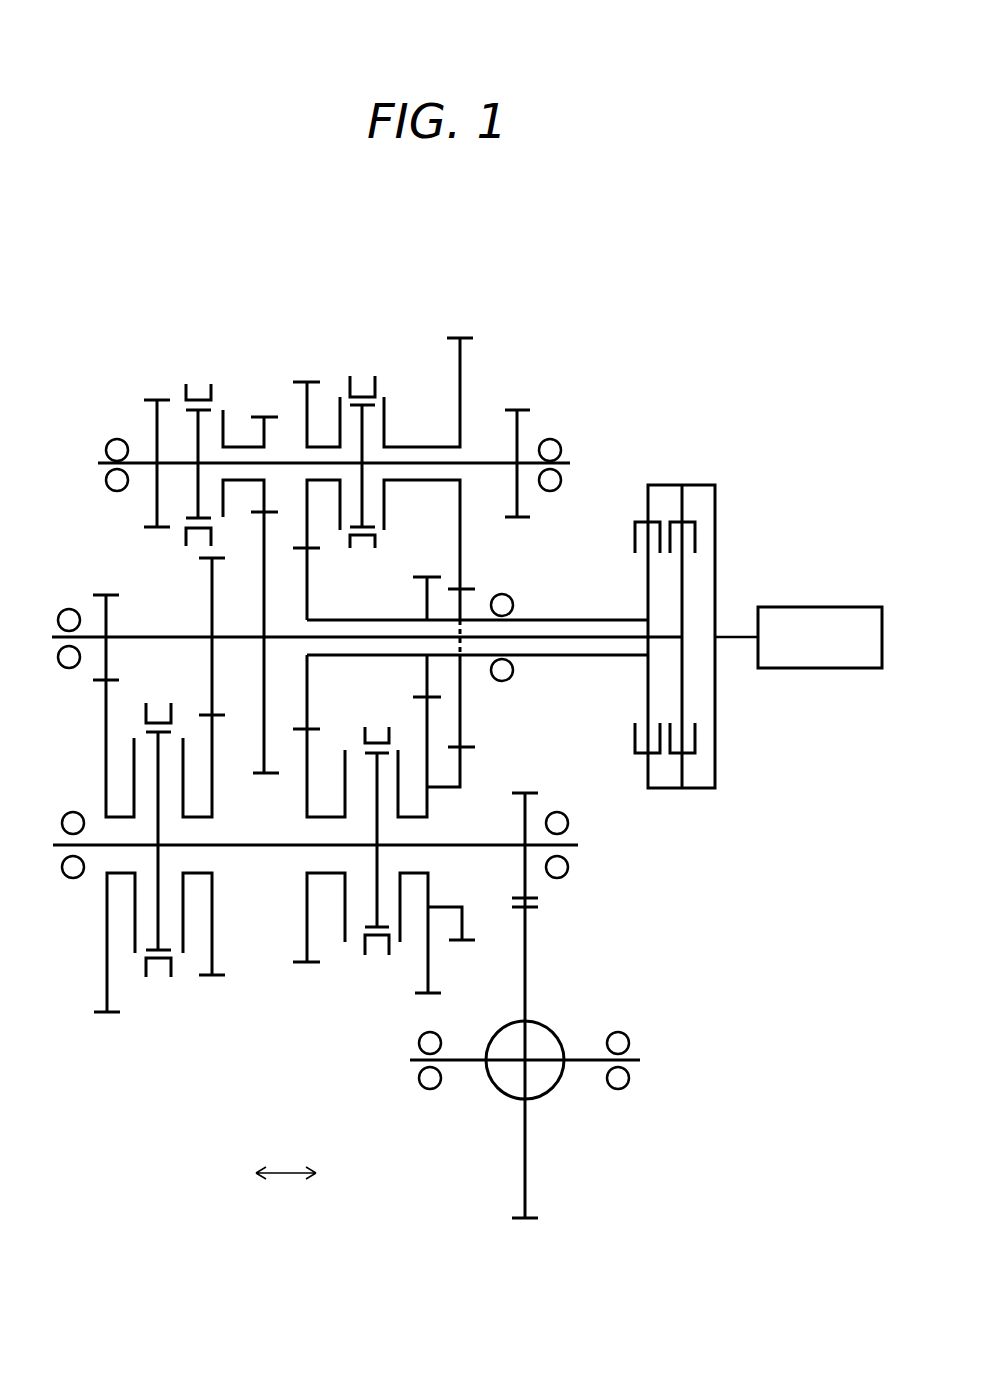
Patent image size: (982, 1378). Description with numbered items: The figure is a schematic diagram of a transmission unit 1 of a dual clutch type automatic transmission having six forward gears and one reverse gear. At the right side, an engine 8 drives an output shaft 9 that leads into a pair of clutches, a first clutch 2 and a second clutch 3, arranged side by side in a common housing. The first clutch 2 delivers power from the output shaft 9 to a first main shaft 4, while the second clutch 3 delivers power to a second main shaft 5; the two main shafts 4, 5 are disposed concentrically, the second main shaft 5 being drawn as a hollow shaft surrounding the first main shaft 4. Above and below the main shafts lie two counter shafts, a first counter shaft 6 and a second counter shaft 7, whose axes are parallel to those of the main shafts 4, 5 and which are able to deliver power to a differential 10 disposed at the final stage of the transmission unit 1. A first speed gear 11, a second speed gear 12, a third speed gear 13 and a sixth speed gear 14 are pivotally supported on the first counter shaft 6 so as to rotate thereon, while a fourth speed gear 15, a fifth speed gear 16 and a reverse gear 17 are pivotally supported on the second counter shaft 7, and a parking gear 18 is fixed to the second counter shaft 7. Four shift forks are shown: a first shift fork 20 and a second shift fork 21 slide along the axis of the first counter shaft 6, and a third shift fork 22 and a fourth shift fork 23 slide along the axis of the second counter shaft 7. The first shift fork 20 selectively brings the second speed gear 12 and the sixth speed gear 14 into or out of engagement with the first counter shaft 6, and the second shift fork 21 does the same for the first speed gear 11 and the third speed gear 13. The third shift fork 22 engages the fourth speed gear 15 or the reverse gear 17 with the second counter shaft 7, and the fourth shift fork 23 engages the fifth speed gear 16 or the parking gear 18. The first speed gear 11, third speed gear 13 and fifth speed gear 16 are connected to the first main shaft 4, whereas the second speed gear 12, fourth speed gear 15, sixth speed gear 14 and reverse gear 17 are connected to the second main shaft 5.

The transmission unit 1 is at (178, 1092).
The first clutch 2 is at (692, 514).
The second clutch 3 is at (637, 520).
The first main shaft 4 is at (157, 634).
The second main shaft 5 is at (358, 619).
The first counter shaft 6 is at (242, 843).
The second counter shaft 7 is at (481, 460).
The engine 8 is at (860, 606).
The output shaft 9 is at (735, 635).
The differential 10 is at (544, 1022).
The first speed gear 11 is at (106, 933).
The second speed gear 12 is at (429, 957).
The third speed gear 13 is at (213, 933).
The sixth speed gear 14 is at (306, 893).
The fourth speed gear 15 is at (308, 412).
The fifth speed gear 16 is at (263, 436).
The reverse gear 17 is at (460, 384).
The parking gear 18 is at (156, 420).
The first shift fork 20 is at (373, 958).
The second shift fork 21 is at (158, 978).
The third shift fork 22 is at (362, 376).
The fourth shift fork 23 is at (198, 384).